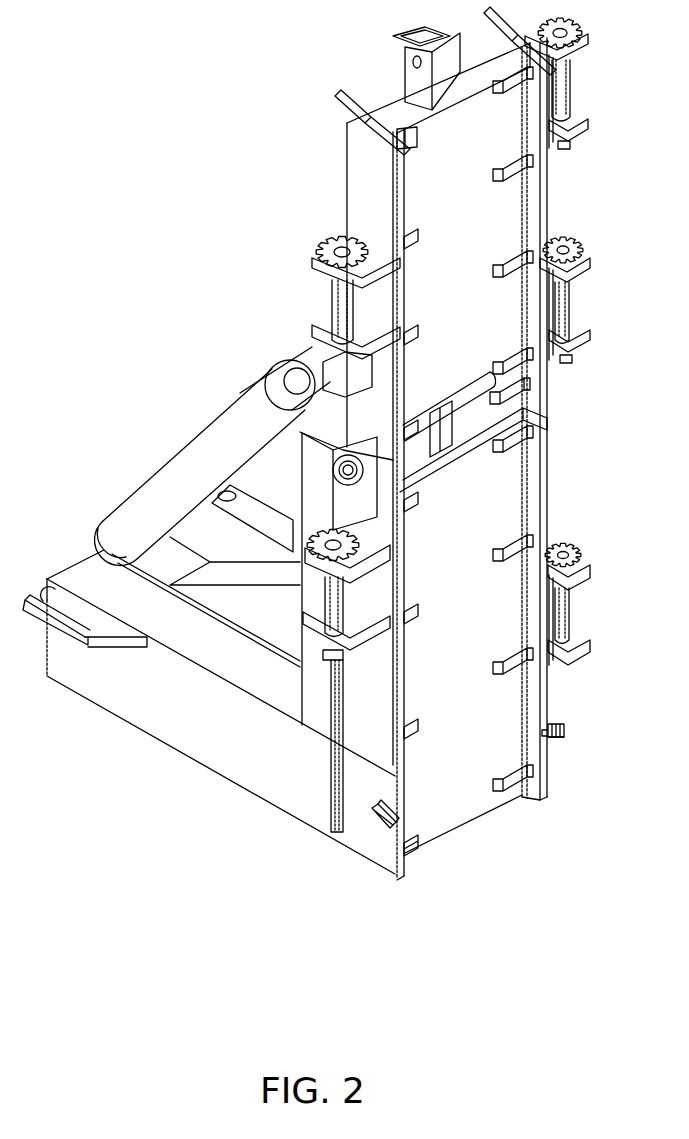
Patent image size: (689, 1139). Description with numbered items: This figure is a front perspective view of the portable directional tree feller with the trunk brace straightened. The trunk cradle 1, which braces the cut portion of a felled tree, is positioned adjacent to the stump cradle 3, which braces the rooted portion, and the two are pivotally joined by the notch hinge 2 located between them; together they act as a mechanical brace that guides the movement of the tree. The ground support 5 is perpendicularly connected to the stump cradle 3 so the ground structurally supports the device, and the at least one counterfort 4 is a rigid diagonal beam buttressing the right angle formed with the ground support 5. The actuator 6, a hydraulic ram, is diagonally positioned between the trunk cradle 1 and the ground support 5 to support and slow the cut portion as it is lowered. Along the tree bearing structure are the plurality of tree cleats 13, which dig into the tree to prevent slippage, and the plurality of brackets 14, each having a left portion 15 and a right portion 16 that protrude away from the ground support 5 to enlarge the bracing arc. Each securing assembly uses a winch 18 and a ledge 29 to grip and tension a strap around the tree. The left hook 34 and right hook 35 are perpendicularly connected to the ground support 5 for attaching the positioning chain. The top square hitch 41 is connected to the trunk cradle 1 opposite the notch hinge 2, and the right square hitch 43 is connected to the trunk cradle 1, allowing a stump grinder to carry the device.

The trunk cradle 1 is at (552, 215).
The notch hinge 2 is at (554, 404).
The stump cradle 3 is at (555, 498).
The counterfort 4 is at (235, 565).
The ground support 5 is at (189, 780).
The actuator 6 is at (237, 378).
The tree cleats 13 is at (510, 95).
The brackets 14 is at (558, 720).
The left portion 15 is at (388, 140).
The right portion 16 is at (510, 52).
The winch 18 is at (570, 100).
The ledge 29 is at (331, 712).
The left hook 34 is at (258, 510).
The right hook 35 is at (75, 605).
The top square hitch 41 is at (413, 80).
The right square hitch 43 is at (350, 386).